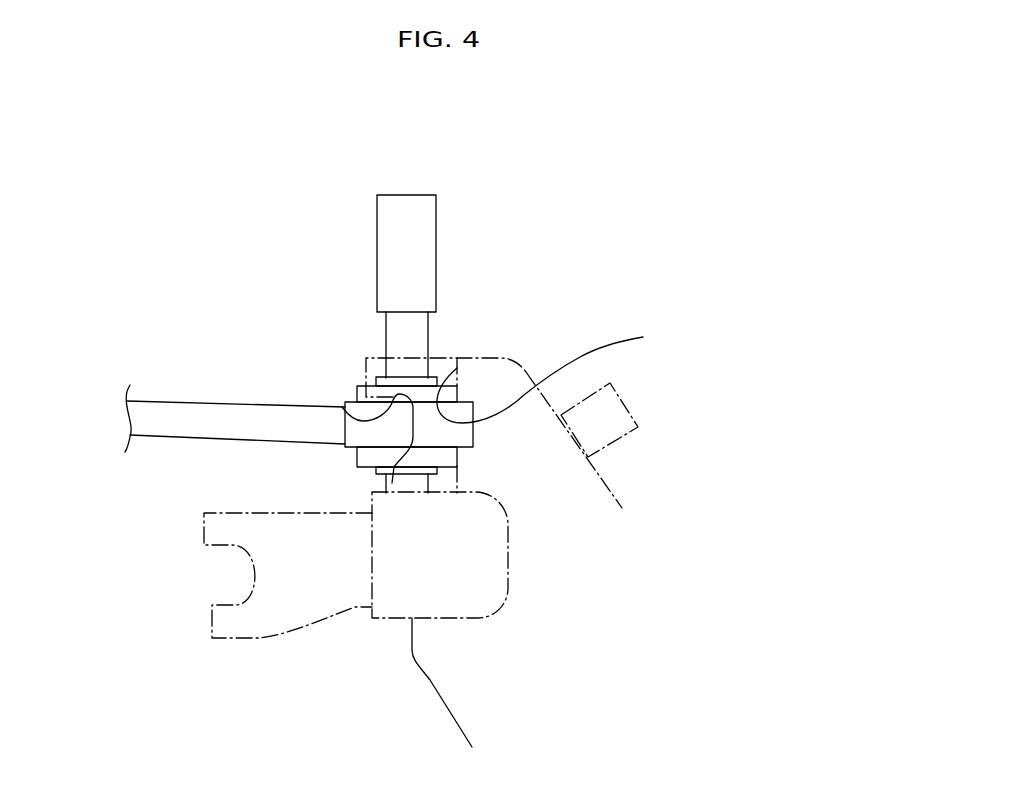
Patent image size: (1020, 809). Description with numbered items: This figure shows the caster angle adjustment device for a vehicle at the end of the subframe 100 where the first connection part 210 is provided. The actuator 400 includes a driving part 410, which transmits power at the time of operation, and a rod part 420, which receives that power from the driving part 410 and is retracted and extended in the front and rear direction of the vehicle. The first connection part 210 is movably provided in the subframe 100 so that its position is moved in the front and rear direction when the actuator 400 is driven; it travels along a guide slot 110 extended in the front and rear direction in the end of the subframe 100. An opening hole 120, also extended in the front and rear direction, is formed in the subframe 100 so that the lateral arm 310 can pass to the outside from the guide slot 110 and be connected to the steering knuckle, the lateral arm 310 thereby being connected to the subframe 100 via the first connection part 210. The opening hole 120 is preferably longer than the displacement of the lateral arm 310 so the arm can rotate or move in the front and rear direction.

The subframe 100 is at (598, 483).
The guide slot 110 is at (532, 405).
The opening hole 120 is at (345, 410).
The first connection part 210 is at (368, 457).
The lateral arm 310 is at (176, 414).
The actuator 400 is at (518, 257).
The driving part 410 is at (430, 210).
The rod part 420 is at (483, 318).